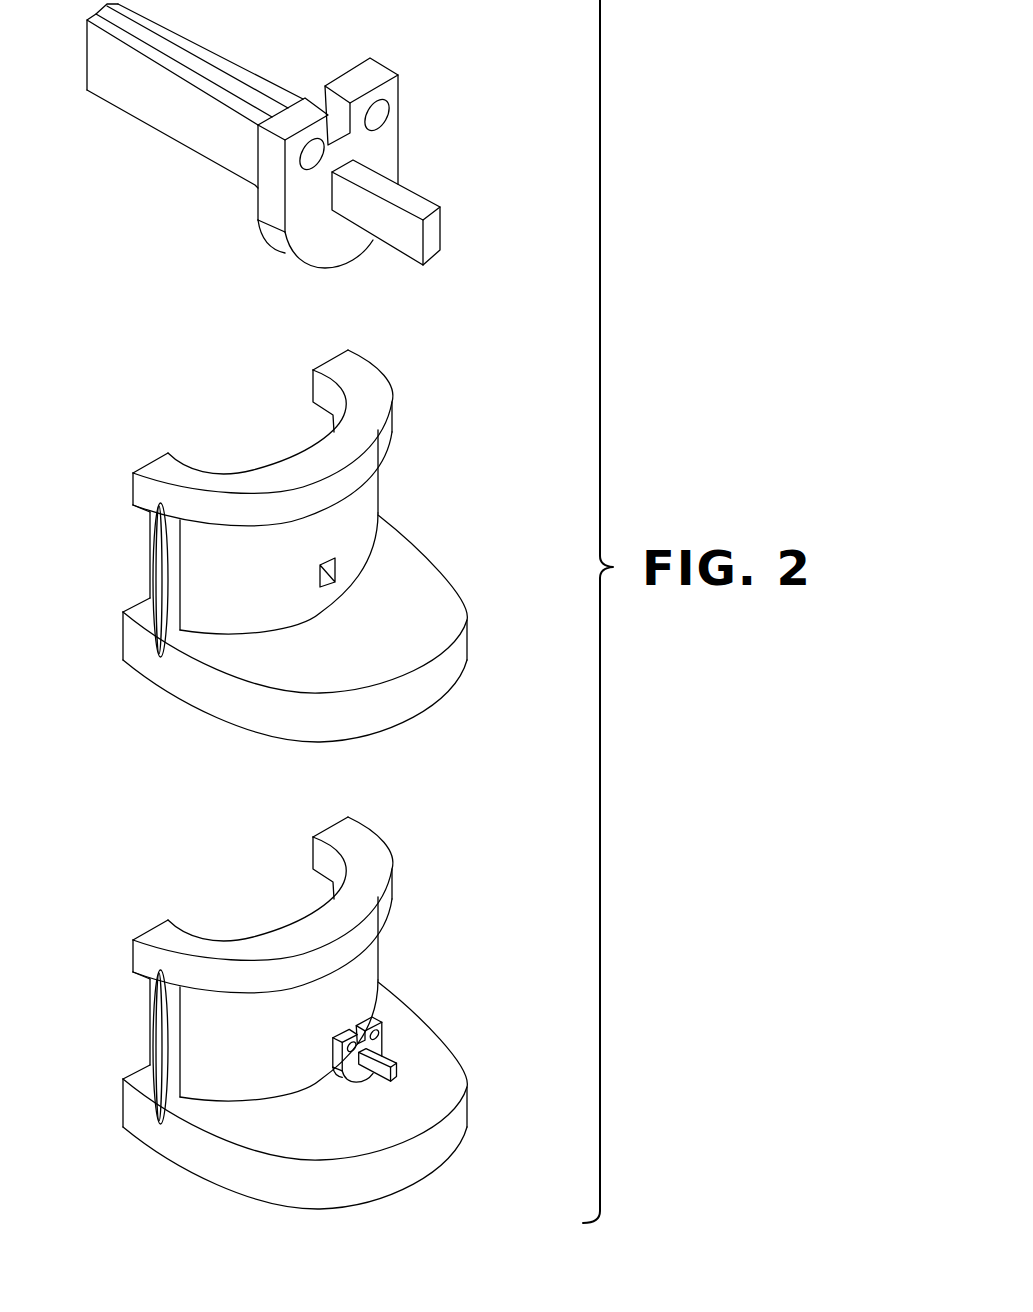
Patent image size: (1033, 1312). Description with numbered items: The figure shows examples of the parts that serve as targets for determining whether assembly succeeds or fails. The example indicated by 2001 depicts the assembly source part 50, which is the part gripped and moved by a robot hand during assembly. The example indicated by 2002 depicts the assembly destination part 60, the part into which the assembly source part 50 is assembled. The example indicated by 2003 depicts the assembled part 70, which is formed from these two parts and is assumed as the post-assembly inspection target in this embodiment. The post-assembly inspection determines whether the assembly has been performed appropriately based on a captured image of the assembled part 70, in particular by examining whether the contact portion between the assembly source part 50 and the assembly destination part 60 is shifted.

The assembly source part 50 is at (357, 65).
The assembly destination part 60 is at (367, 362).
The assembled part 70 is at (400, 984).
The example of assembly source part 2001 is at (484, 106).
The example of assembly destination part 2002 is at (484, 451).
The example of assembled part 2003 is at (484, 869).